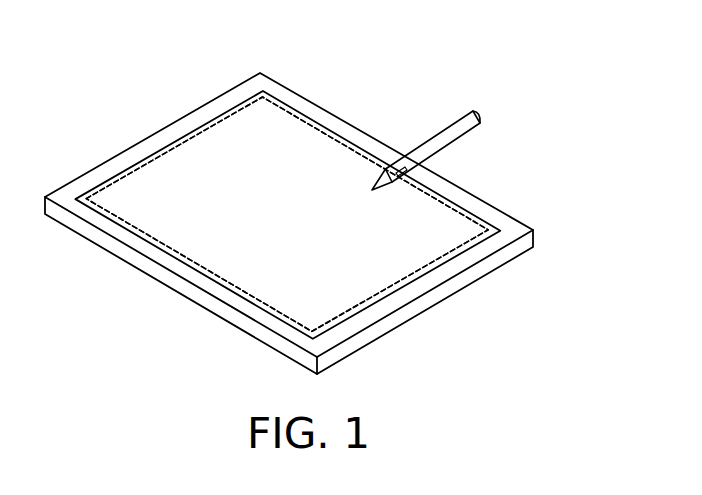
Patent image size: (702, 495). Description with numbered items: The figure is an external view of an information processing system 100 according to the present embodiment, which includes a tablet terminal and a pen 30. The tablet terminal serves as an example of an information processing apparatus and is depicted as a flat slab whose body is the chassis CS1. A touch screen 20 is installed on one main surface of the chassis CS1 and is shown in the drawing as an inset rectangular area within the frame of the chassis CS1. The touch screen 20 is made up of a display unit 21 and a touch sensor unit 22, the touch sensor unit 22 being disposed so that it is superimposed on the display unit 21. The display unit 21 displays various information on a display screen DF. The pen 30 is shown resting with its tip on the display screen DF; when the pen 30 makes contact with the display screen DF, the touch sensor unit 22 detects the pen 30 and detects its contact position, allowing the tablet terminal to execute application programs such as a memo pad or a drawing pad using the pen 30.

The information processing system 100 is at (309, 194).
The chassis CS1 is at (163, 277).
The touch screen 20 is at (329, 240).
The display unit 21 is at (287, 214).
The touch sensor unit 22 is at (377, 293).
The display screen DF is at (423, 240).
The pen 30 is at (457, 130).